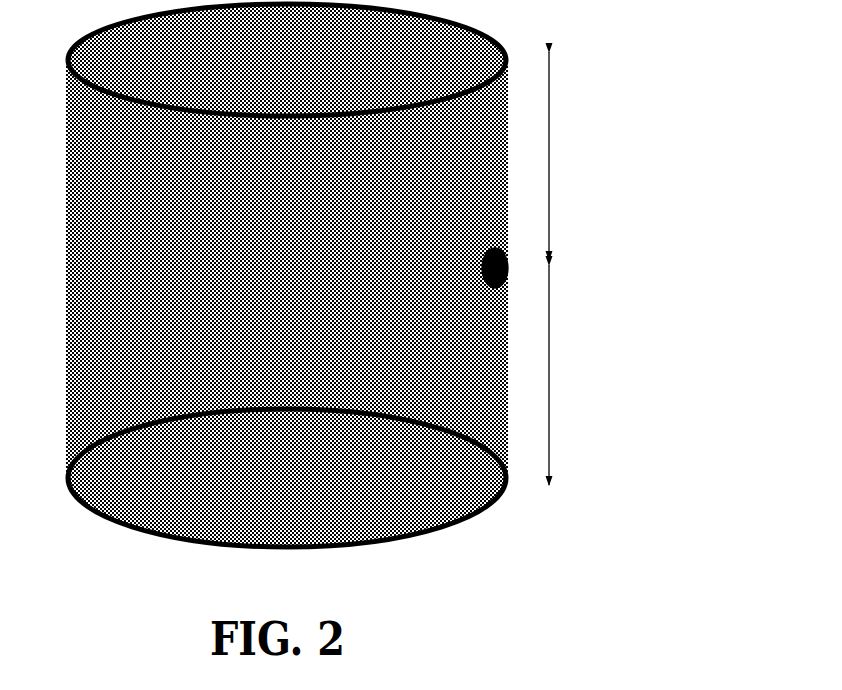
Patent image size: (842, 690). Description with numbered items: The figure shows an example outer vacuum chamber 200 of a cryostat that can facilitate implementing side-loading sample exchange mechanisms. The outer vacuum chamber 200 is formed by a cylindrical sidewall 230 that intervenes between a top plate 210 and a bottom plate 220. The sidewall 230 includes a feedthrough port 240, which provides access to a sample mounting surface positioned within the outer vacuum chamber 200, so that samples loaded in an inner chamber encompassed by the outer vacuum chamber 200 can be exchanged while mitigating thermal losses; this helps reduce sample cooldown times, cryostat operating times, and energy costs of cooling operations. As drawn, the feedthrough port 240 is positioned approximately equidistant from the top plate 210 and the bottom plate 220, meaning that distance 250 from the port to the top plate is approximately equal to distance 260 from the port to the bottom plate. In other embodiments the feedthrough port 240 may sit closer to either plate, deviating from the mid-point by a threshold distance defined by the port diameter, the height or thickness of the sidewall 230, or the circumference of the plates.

The outer vacuum chamber 200 is at (664, 80).
The top plate 210 is at (287, 60).
The bottom plate 220 is at (145, 537).
The sidewall 230 is at (287, 269).
The feedthrough port 240 is at (481, 273).
The distance 250 is at (551, 172).
The distance 260 is at (551, 355).